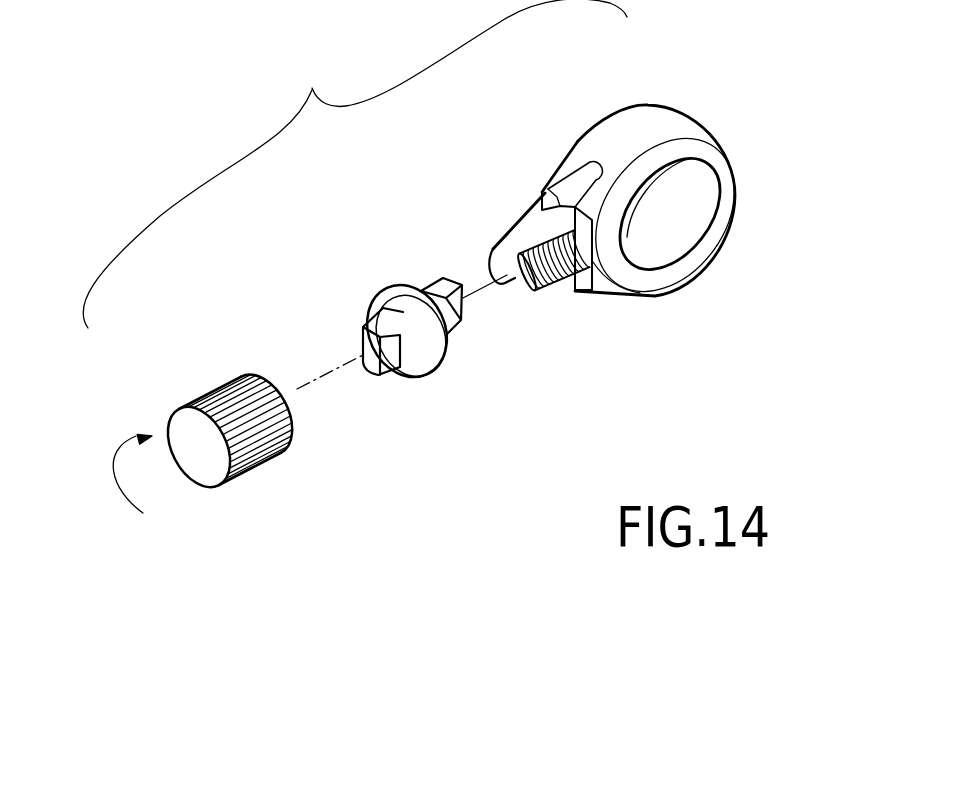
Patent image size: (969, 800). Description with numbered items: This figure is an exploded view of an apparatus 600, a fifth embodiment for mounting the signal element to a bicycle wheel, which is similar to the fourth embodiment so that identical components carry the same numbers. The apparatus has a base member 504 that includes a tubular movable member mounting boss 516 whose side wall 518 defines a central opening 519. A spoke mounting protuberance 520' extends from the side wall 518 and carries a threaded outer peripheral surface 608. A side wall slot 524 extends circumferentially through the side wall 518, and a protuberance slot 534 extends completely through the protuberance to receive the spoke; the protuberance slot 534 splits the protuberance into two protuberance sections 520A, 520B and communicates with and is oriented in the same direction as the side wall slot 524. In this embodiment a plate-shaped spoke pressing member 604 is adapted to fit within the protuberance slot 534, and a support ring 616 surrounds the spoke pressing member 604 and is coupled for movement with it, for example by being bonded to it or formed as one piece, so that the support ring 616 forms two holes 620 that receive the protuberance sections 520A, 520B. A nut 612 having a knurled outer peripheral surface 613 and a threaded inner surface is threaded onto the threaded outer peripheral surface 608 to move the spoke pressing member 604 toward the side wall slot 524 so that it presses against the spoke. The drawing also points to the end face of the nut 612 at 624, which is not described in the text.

The apparatus 600 is at (355, 164).
The base member 504 is at (613, 199).
The side wall slot 524 is at (594, 171).
The side wall 518 is at (733, 176).
The central opening 519 is at (690, 222).
The movable member mounting boss 516 is at (677, 273).
The protuberance slot 534 is at (535, 238).
The support ring 616 is at (398, 287).
The protuberance section 520A is at (493, 248).
The holes 620 is at (372, 318).
The spoke pressing member 604 is at (362, 337).
The protuberance section 520B is at (539, 286).
The spoke mounting protuberance 520' is at (598, 328).
The threaded outer peripheral surface 608 is at (640, 293).
The knurled outer peripheral surface 613 is at (220, 395).
The knob face 624 is at (197, 462).
The nut 612 is at (226, 433).